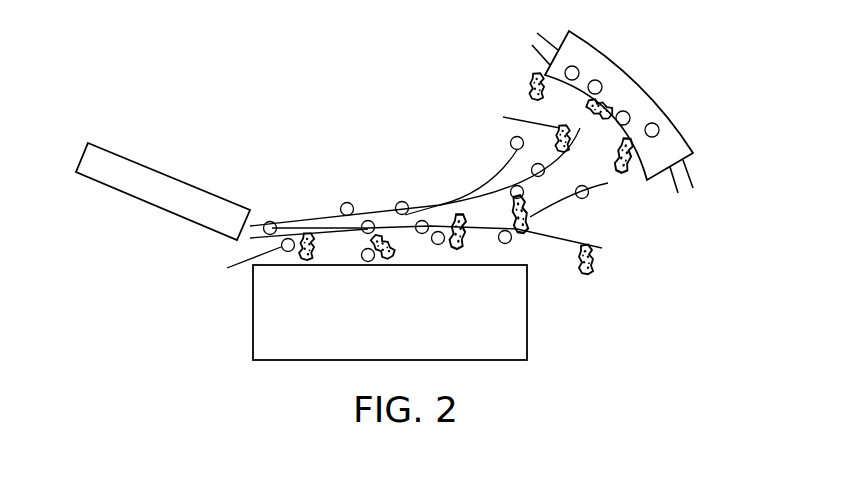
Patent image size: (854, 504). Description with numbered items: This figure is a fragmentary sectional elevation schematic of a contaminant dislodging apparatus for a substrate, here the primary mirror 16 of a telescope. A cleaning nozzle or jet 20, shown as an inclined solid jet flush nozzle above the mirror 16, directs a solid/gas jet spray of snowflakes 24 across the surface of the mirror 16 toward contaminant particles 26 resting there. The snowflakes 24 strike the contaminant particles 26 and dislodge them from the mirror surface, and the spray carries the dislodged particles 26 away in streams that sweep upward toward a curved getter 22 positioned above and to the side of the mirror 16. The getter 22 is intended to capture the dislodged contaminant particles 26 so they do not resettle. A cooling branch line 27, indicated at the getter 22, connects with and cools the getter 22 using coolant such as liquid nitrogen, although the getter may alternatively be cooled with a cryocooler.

The mirror 16 is at (497, 353).
The cleaning nozzle 20 is at (137, 199).
The getter 22 is at (658, 113).
The snowflakes 24 is at (268, 223).
The contaminant particles 26 is at (592, 262).
The cooling branch line 27 is at (687, 186).